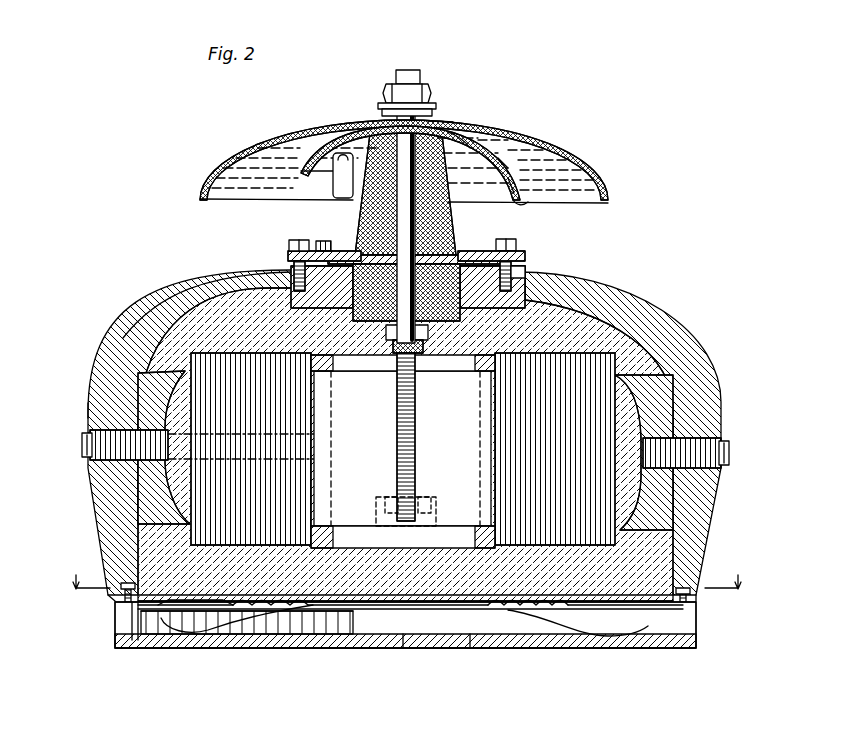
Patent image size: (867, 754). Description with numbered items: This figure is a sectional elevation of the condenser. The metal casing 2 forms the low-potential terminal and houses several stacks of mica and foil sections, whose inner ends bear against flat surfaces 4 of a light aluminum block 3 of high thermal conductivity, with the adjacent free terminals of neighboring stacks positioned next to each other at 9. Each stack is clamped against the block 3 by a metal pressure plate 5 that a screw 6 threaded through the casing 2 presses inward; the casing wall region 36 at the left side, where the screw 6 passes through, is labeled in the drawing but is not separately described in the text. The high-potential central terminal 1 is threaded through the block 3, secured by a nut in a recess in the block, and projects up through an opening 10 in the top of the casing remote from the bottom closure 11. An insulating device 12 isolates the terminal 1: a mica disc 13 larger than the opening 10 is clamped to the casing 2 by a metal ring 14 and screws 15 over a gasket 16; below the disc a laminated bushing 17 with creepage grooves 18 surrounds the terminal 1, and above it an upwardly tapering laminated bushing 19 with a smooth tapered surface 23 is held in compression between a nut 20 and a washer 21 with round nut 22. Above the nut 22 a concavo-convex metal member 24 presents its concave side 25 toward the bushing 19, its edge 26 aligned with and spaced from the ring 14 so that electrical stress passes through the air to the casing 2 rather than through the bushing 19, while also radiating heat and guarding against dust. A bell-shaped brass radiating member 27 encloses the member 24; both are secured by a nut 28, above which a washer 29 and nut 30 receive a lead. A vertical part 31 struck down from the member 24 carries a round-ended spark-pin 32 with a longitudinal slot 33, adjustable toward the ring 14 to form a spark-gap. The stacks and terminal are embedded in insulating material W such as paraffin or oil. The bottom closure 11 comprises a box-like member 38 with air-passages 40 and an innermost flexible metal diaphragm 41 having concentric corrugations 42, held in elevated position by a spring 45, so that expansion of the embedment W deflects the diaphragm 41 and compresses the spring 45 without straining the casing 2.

The central terminal 1 is at (400, 63).
The casing 2 is at (98, 345).
The metal block 3 is at (404, 518).
The flat surfaces of the block 4 is at (308, 394).
The metal pressure plate 5 is at (150, 497).
The screw 6 is at (76, 440).
The adjacent free terminals 9 is at (298, 483).
The opening 10 is at (517, 266).
The closure or bottom 11 is at (268, 645).
The insulating device 12 is at (445, 190).
The disc or plate 13 is at (312, 242).
The metal ring 14 is at (502, 244).
The screws 15 is at (283, 246).
The gasket 16 is at (518, 258).
The insulating bushing 17 is at (228, 266).
The corrugations or grooves 18 is at (283, 263).
The insulating bushing 19 is at (447, 225).
The nut 20 is at (418, 348).
The washer 21 is at (452, 125).
The round nut 22 is at (430, 114).
The tapered surface 23 is at (500, 162).
The concavo-convex metal member 24 is at (490, 145).
The concave side 25 is at (500, 172).
The edge 26 is at (510, 195).
The bell-shaped brass member 27 is at (228, 172).
The nut 28 is at (372, 104).
The washer 29 is at (388, 100).
The nut 30 is at (420, 85).
The vertical part 31 is at (333, 145).
The spark-pin 32 is at (328, 185).
The longitudinal slot 33 is at (325, 168).
The casing wall 36 is at (82, 400).
The box-like member 38 is at (548, 605).
The air-passages 40 is at (508, 610).
The flexible metal diaphragm 41 is at (460, 632).
The concentric corrugations 42 is at (580, 628).
The spring 45 is at (195, 602).
The insulating material W is at (140, 548).